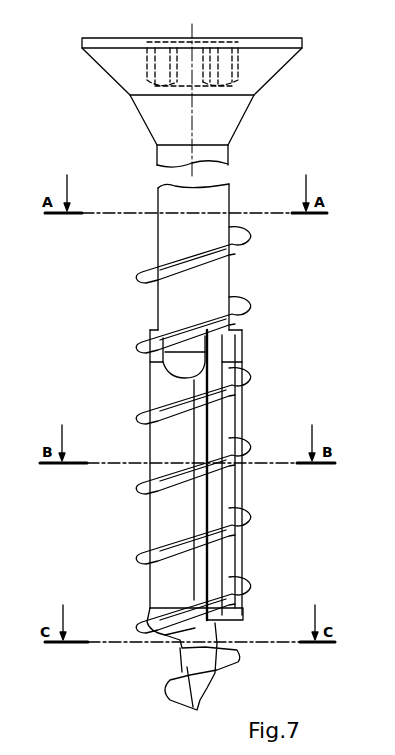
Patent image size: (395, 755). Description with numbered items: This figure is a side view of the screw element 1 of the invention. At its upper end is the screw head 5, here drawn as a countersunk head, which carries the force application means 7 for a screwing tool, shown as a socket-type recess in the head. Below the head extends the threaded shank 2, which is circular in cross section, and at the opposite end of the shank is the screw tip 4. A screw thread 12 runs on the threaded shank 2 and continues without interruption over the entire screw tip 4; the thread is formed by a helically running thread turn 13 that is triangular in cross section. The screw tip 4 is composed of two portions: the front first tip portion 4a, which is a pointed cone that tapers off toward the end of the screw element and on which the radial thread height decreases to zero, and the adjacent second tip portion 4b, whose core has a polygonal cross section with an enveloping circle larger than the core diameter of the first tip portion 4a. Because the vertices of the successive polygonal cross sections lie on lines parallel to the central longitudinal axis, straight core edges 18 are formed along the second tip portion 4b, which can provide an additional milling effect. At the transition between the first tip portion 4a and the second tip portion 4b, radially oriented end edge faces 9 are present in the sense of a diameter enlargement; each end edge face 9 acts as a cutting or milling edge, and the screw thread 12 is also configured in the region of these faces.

The screw element 1 is at (187, 167).
The threaded shank 2 is at (215, 280).
The screw tip 4 is at (202, 472).
The first tip portion 4a is at (193, 648).
The second tip portion 4b is at (175, 507).
The screw head 5 is at (129, 60).
The force application means 7 is at (200, 66).
The end edge face 9 is at (150, 613).
The screw thread 12 is at (230, 380).
The thread turn 13 is at (242, 548).
The core edges 18 is at (145, 383).